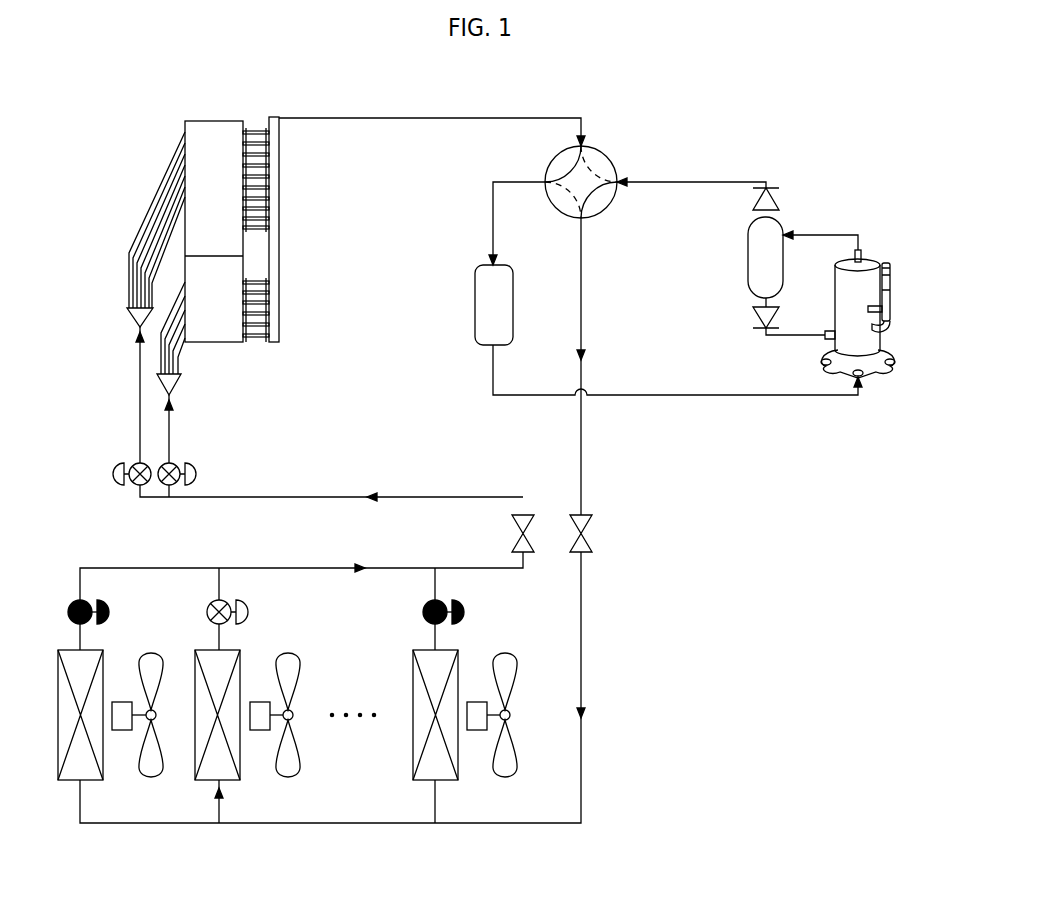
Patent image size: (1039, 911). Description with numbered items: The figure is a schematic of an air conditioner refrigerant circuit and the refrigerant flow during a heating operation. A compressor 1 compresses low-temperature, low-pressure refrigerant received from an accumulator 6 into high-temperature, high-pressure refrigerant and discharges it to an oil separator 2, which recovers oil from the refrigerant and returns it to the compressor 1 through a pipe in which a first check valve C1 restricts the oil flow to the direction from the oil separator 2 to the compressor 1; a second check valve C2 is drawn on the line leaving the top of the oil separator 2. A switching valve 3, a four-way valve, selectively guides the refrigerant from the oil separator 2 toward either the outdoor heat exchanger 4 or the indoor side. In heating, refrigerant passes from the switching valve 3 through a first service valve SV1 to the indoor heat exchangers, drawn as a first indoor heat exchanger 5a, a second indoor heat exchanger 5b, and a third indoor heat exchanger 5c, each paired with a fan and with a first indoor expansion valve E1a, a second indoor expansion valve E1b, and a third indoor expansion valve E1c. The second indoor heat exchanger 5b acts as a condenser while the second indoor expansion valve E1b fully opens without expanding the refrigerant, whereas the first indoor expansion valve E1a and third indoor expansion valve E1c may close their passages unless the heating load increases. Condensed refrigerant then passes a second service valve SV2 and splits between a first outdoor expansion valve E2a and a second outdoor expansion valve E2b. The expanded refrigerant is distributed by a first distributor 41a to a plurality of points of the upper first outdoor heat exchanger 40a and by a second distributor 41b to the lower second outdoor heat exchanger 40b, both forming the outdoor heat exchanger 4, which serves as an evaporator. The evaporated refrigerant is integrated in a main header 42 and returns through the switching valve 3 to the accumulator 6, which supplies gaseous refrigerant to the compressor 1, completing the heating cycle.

The compressor 1 is at (883, 335).
The oil separator 2 is at (785, 222).
The switching valve 3 is at (597, 148).
The outdoor heat exchanger 4 is at (199, 259).
The accumulator 6 is at (475, 307).
The first outdoor heat exchanger 40a is at (183, 160).
The second outdoor heat exchanger 40b is at (183, 273).
The first distributor 41a is at (128, 312).
The second distributor 41b is at (158, 380).
The main header 42 is at (280, 178).
The first check valve C1 is at (753, 320).
The second check valve C2 is at (768, 188).
The first outdoor expansion valve E2a is at (113, 474).
The second outdoor expansion valve E2b is at (197, 474).
The first service valve SV1 is at (585, 533).
The second service valve SV2 is at (520, 533).
The first indoor expansion valve E1a is at (482, 598).
The second indoor expansion valve E1b is at (262, 598).
The third indoor expansion valve E1c is at (130, 598).
The first indoor heat exchanger 5a is at (452, 782).
The second indoor heat exchanger 5b is at (238, 782).
The third indoor heat exchanger 5c is at (100, 782).